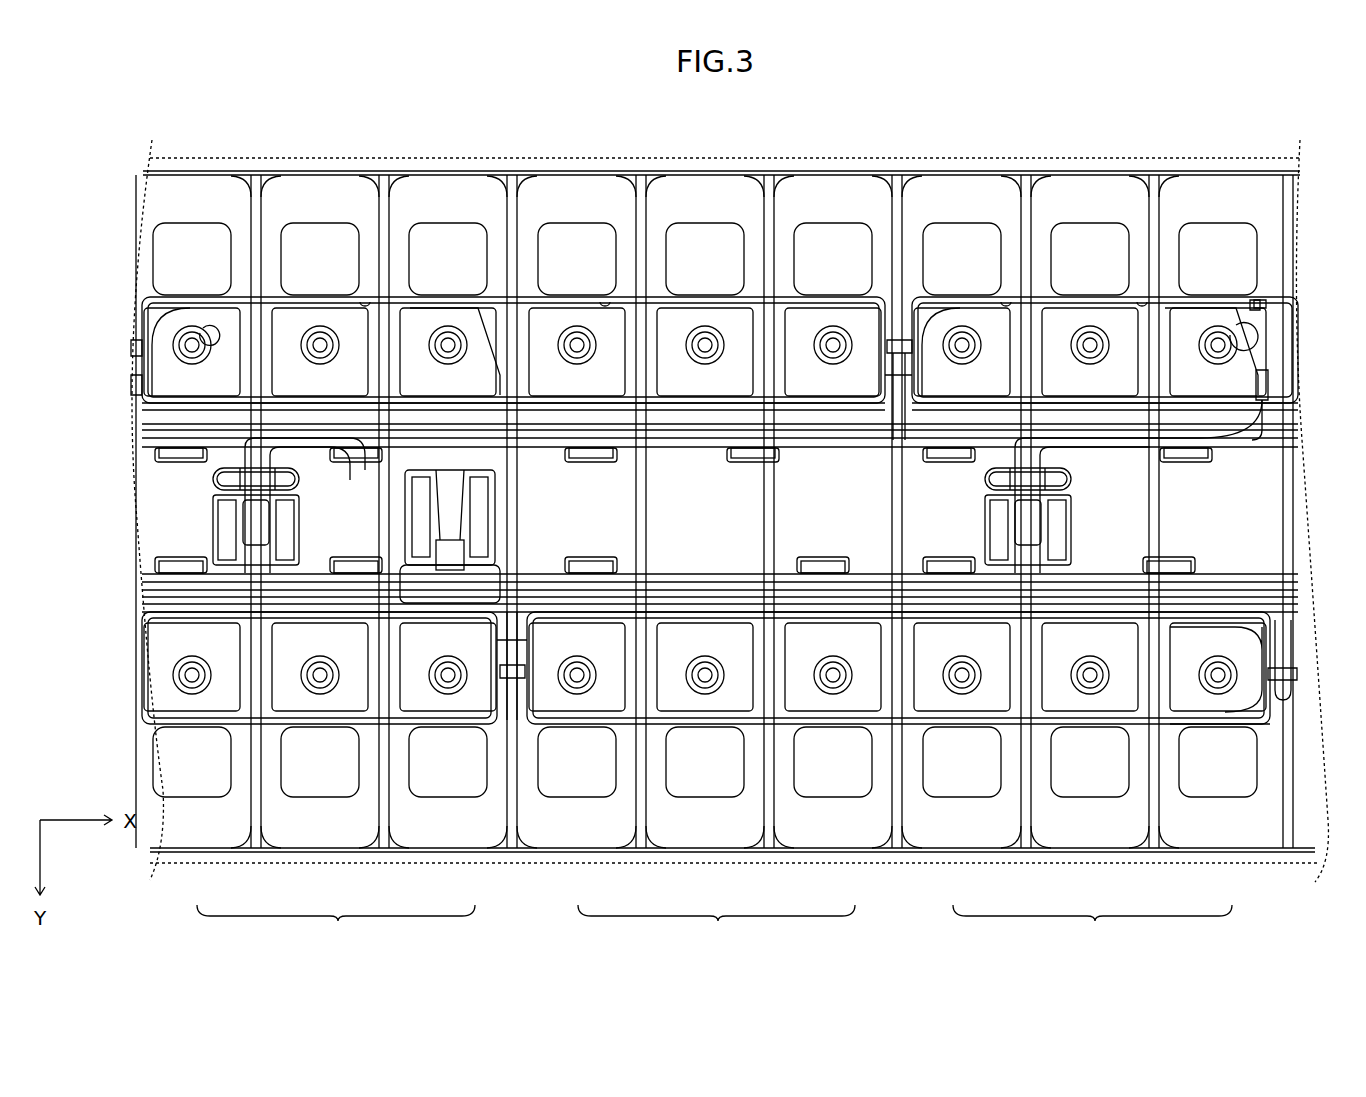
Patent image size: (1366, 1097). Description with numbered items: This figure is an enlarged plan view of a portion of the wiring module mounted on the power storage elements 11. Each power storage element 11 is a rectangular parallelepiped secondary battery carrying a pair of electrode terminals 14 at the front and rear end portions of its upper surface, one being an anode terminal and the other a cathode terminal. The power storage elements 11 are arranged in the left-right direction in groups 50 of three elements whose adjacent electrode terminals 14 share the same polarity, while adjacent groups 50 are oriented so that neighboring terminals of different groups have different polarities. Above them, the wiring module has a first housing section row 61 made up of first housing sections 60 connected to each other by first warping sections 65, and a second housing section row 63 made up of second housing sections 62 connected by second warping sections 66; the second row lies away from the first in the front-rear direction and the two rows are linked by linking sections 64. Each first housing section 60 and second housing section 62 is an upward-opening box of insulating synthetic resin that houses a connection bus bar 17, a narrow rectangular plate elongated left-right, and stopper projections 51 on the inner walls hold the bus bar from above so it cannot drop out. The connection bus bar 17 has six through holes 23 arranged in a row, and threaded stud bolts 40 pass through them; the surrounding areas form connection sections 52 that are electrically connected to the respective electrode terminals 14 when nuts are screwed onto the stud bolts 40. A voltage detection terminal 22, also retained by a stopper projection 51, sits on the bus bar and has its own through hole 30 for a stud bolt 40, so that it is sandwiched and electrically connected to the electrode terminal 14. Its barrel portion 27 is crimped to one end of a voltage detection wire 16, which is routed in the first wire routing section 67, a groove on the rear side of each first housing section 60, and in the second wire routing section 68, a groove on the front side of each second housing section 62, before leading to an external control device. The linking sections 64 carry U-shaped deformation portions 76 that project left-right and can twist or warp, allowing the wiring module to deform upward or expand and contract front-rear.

The power storage element 11 is at (1220, 830).
The electrode terminal 14 is at (180, 757).
The voltage detection wire 16 is at (1268, 583).
The connection bus bar 17 is at (1240, 648).
The voltage detection terminal 22 is at (1215, 335).
The through hole 23 is at (1235, 348).
The barrel portion 27 is at (1262, 387).
The through hole 30 is at (1228, 345).
The stud bolt 40 is at (1200, 400).
The group of power storage elements 50 is at (714, 931).
The stopper projection 51 is at (1263, 303).
The connection section 52 is at (797, 320).
The first housing section 60 is at (1223, 713).
The first housing section row 61 is at (1237, 725).
The second housing section 62 is at (1065, 313).
The second housing section row 63 is at (1255, 292).
The linking section 64 is at (1072, 513).
The first warping section 65 is at (512, 690).
The second warping section 66 is at (900, 340).
The first wire routing section 67 is at (1267, 612).
The second wire routing section 68 is at (1272, 440).
The deformation portion 76 is at (1072, 477).